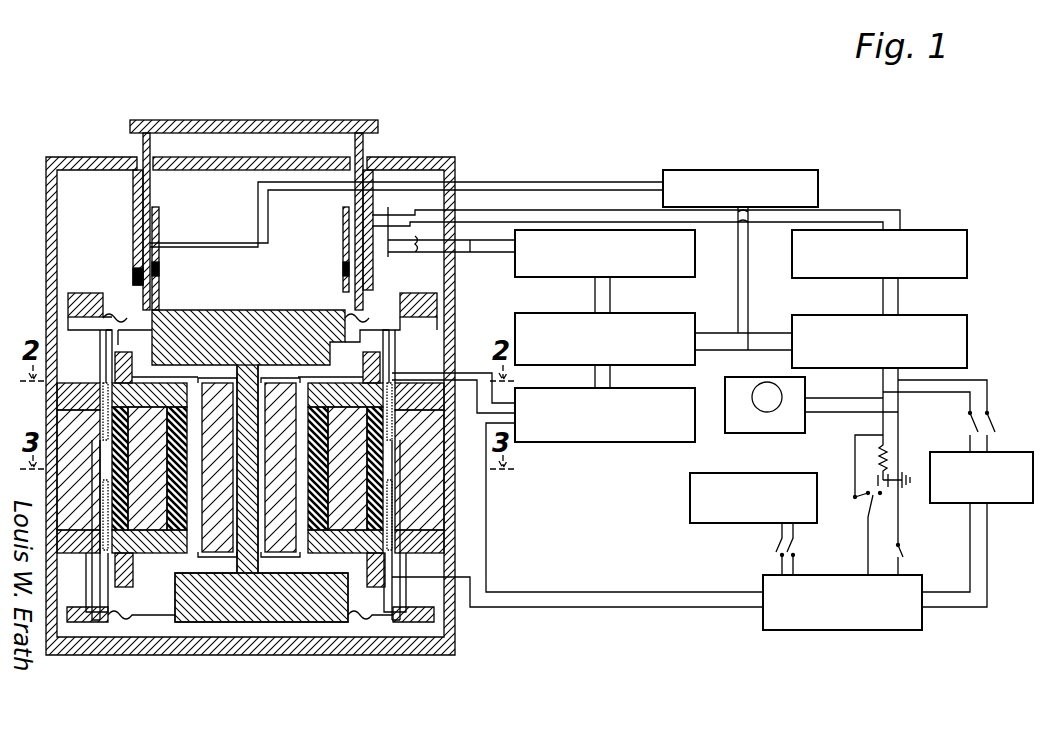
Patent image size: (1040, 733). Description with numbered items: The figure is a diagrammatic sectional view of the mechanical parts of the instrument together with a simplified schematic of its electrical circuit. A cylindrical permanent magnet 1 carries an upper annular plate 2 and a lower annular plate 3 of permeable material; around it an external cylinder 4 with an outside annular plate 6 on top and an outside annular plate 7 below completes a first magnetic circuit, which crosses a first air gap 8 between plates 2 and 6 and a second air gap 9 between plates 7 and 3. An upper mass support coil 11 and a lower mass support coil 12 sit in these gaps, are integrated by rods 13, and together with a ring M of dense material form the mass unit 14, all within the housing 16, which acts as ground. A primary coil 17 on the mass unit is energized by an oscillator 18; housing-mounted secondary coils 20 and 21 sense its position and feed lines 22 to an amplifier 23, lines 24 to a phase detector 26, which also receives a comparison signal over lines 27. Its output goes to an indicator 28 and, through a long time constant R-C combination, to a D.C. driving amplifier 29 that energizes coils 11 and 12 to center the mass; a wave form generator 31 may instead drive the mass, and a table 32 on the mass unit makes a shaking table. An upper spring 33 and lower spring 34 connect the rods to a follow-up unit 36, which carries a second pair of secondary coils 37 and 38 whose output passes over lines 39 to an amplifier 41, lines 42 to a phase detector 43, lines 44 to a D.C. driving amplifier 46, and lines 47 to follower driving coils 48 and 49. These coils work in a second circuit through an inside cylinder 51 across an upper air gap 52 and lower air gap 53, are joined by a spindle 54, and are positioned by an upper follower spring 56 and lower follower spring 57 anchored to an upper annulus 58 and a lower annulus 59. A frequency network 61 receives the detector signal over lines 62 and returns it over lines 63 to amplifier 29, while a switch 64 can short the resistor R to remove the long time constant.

The permanent magnet 1 is at (251, 468).
The annular plate 2 is at (247, 395).
The annular plate 3 is at (247, 541).
The external cylinder 4 is at (78, 515).
The outside annular plate 6 is at (57, 395).
The outside annular plate 7 is at (78, 541).
The first air gap 8 is at (106, 368).
The second air gap 9 is at (100, 560).
The upper mass support coil 11 is at (103, 415).
The lower mass support coil 12 is at (103, 500).
The rods 13 is at (100, 348).
The mass unit 14 is at (103, 291).
The instrument housing 16 is at (46, 236).
The primary coil 17 is at (150, 243).
The oscillator 18 is at (785, 168).
The secondary coil 20 is at (132, 203).
The secondary coil 21 is at (133, 272).
The lines 22 is at (560, 204).
The amplifier 23 is at (948, 230).
The lines 24 is at (898, 292).
The phase detector 26 is at (955, 322).
The lines 27 is at (748, 287).
The indicator 28 is at (805, 384).
The D.C. driving amplifier 29 is at (922, 628).
The wave form generator 31 is at (690, 508).
The table 32 is at (294, 119).
The upper spring 33 is at (236, 329).
The lower spring 34 is at (124, 612).
The follow-up unit 36 is at (249, 299).
The secondary coil 37 is at (159, 216).
The secondary coil 38 is at (159, 272).
The lines 39 is at (476, 246).
The amplifier 41 is at (695, 267).
The lines 42 is at (610, 298).
The phase detector 43 is at (695, 357).
The lines 44 is at (610, 377).
The D.C. driving amplifier 46 is at (665, 440).
The lines 47 is at (500, 405).
The follower driving coil 48 is at (247, 376).
The follower driving coil 49 is at (200, 575).
The inside cylinder 51 is at (249, 467).
The upper air gap 52 is at (198, 385).
The lower air gap 53 is at (249, 560).
The spindle 54 is at (246, 469).
The upper follower spring 56 is at (165, 330).
The lower follower spring 57 is at (140, 582).
The upper annulus 58 is at (132, 368).
The lower annulus 59 is at (115, 584).
The frequency network 61 is at (1012, 503).
The lines 62 is at (992, 396).
The lines 63 is at (987, 556).
The switch 64 is at (880, 512).
The ring of dense material M is at (68, 301).